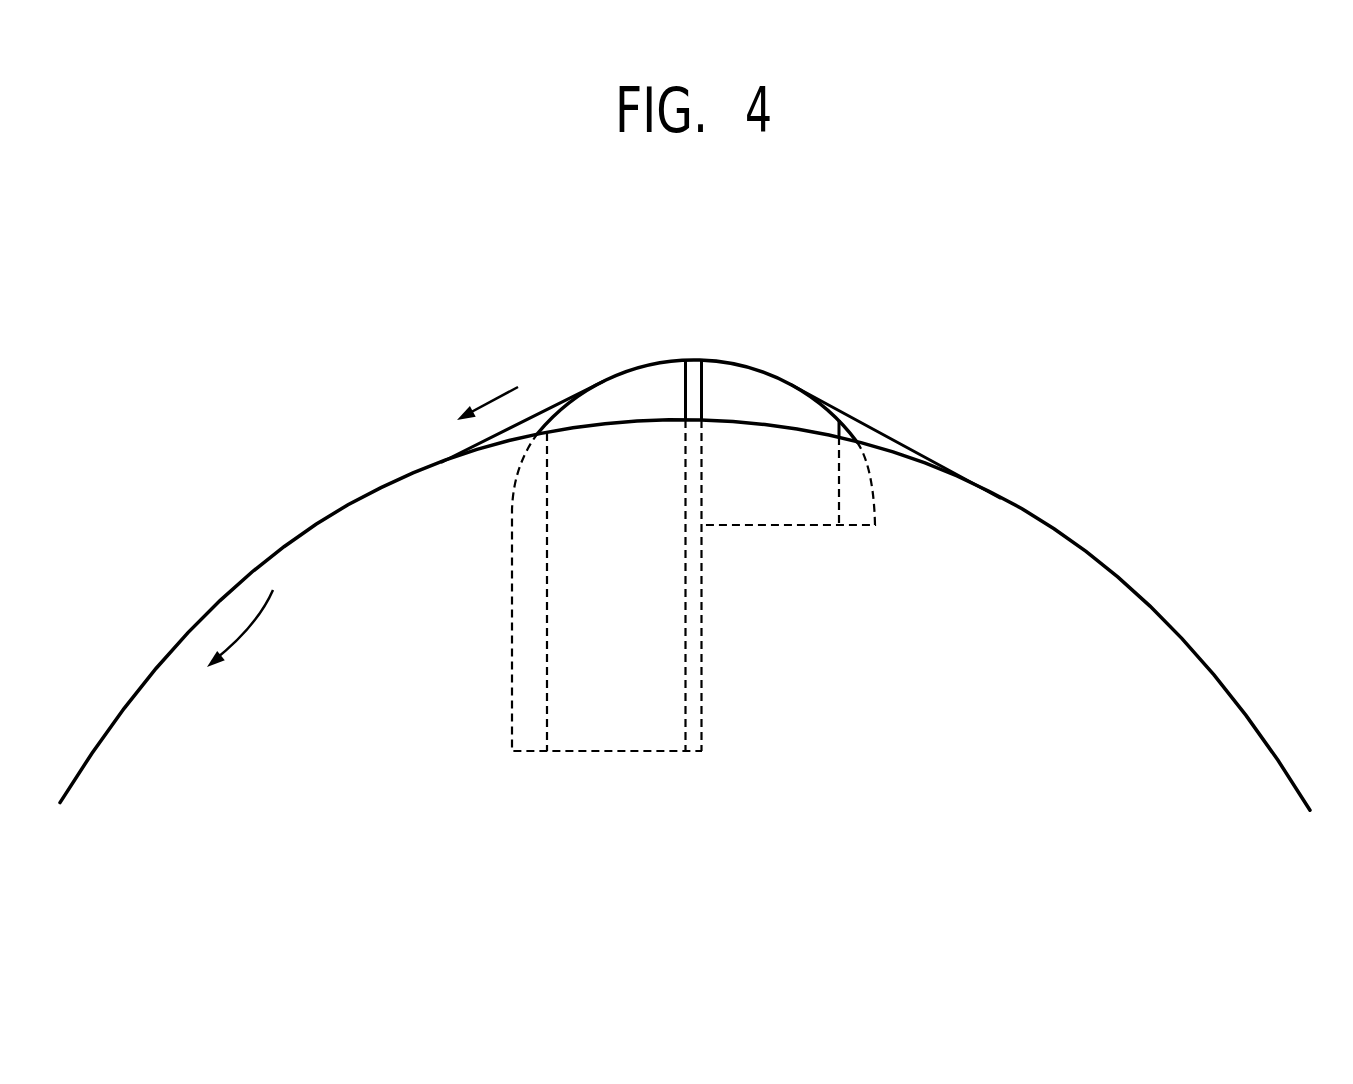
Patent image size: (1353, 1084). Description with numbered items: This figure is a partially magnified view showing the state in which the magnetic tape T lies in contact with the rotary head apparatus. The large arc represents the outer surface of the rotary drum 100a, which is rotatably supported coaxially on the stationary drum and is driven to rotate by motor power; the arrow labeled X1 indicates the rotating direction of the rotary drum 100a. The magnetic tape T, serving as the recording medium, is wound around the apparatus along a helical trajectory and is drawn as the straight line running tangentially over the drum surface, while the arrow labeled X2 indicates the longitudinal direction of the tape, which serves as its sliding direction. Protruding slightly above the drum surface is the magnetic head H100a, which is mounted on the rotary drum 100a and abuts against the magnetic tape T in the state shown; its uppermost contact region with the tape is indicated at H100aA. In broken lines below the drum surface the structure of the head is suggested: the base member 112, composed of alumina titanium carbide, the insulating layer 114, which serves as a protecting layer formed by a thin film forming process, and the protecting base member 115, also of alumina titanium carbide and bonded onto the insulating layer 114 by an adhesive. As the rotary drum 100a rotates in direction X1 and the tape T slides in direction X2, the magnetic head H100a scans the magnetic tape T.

The rotary drum 100a is at (1058, 560).
The base member 112 is at (620, 392).
The insulating layer 114 is at (693, 752).
The protecting base member 115 is at (798, 412).
The magnetic tape T is at (913, 448).
The abutting portion of magnetic head H100a H100aA is at (733, 360).
The magnetic head H100a is at (705, 652).
The X1 direction X1 is at (230, 650).
The X2 direction X2 is at (464, 417).